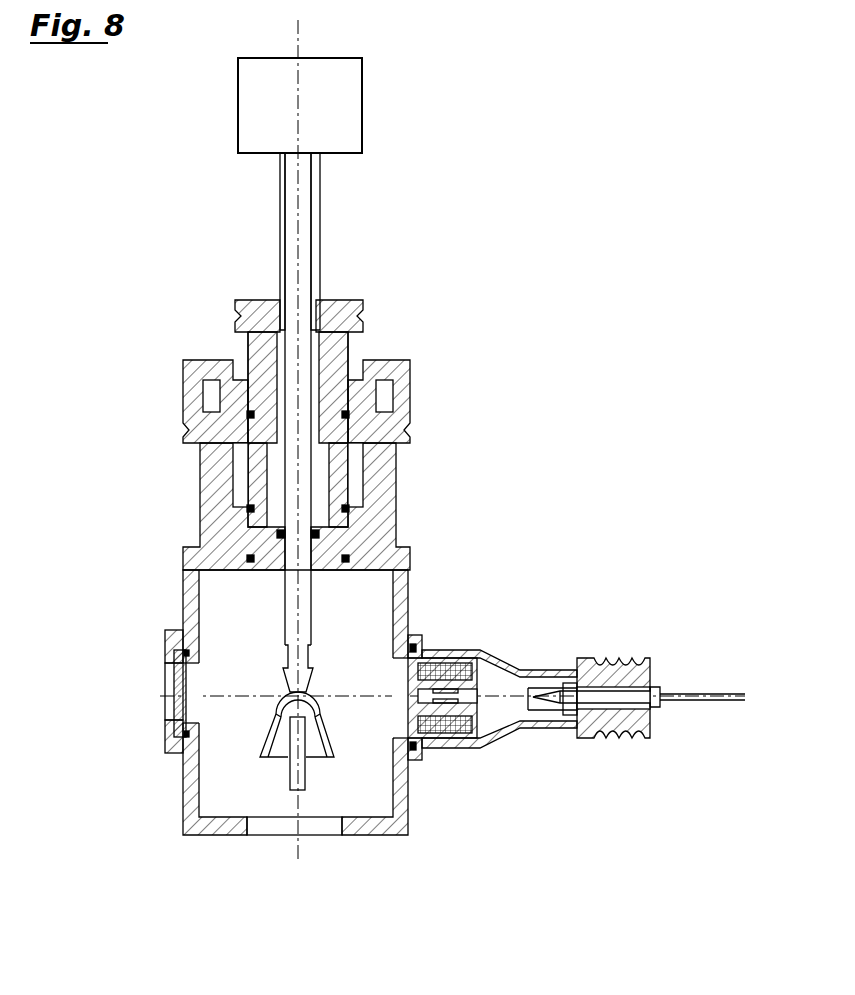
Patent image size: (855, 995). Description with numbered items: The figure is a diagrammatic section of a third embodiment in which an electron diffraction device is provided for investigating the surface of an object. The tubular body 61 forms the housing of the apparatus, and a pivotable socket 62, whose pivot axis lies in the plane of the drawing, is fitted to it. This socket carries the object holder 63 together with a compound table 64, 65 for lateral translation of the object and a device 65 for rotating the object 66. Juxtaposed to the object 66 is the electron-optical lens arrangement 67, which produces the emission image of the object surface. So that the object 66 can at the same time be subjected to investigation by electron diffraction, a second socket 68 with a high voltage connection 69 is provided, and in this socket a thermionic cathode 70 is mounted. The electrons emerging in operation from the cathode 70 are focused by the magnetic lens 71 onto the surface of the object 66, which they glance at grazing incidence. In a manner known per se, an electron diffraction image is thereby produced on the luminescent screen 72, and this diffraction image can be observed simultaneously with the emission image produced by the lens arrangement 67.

The tubular body 61 is at (400, 595).
The pivotable socket 62 is at (375, 520).
The object holder 63 is at (305, 236).
The compound table 64 is at (335, 355).
The compound table / rotation device 65 is at (403, 410).
The object 66 is at (295, 687).
The electron-optical lens arrangement 67 is at (268, 725).
The second socket 68 is at (447, 653).
The high voltage connection 69 is at (690, 705).
The thermionic cathode 70 is at (543, 700).
The magnetic lens 71 is at (457, 747).
The luminescent screen 72 is at (167, 726).